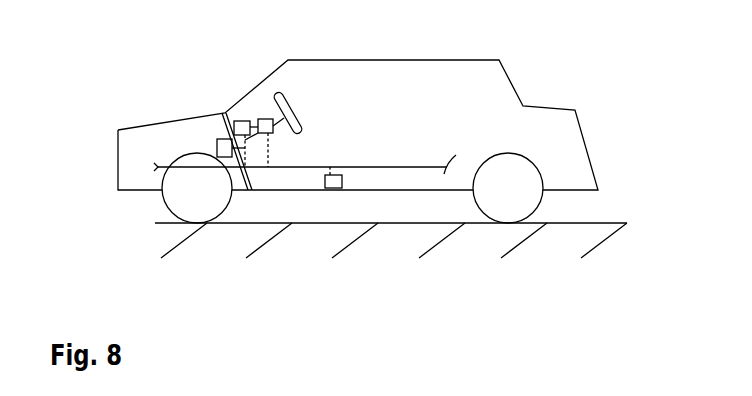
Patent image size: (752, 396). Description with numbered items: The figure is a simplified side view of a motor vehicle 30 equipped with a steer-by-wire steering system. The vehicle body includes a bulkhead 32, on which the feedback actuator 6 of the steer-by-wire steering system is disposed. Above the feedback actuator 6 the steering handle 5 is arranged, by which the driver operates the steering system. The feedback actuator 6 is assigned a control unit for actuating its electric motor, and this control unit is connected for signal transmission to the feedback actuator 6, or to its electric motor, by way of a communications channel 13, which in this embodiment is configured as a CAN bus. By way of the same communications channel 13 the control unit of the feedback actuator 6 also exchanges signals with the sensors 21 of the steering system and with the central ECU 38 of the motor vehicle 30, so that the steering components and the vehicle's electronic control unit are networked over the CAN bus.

The motor vehicle 30 is at (178, 95).
The sensors 21 is at (243, 121).
The steering handle 5 is at (281, 98).
The bulkhead 32 is at (222, 126).
The feedback actuator 6 is at (217, 143).
The communications channel 13 is at (398, 167).
The central ECU 38 is at (342, 182).